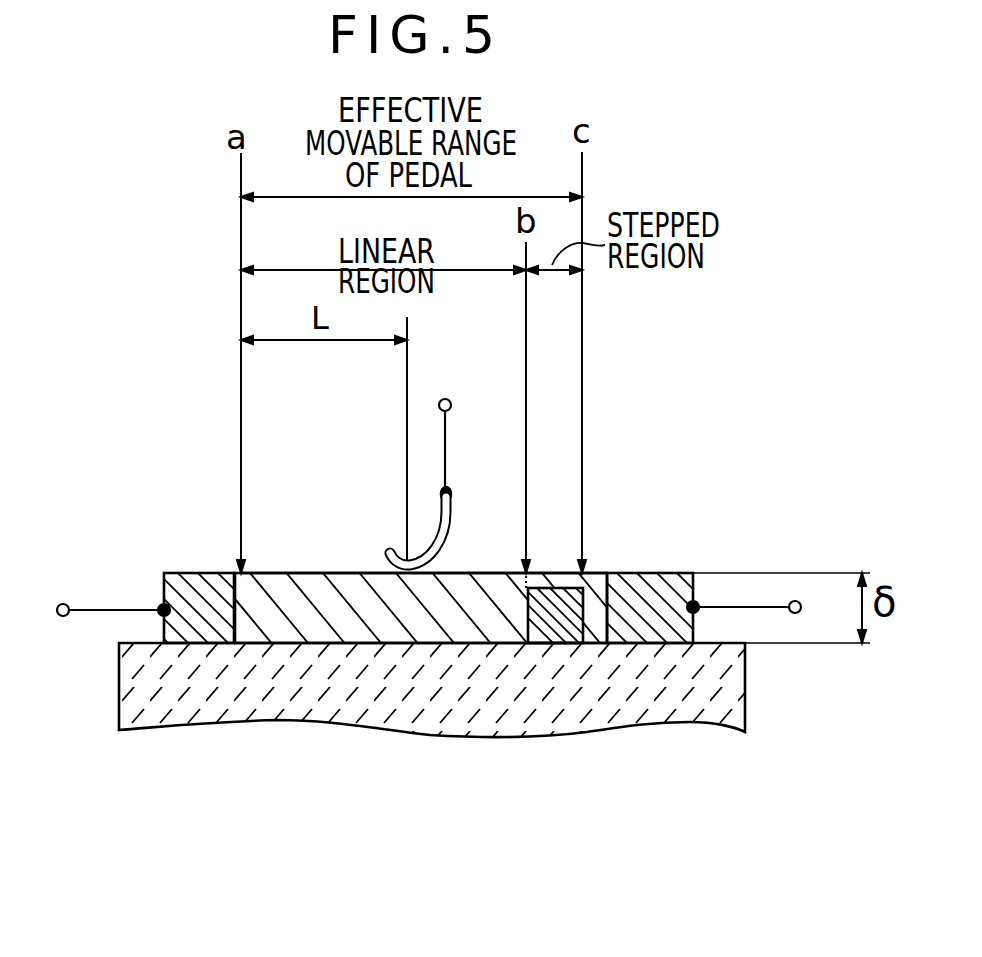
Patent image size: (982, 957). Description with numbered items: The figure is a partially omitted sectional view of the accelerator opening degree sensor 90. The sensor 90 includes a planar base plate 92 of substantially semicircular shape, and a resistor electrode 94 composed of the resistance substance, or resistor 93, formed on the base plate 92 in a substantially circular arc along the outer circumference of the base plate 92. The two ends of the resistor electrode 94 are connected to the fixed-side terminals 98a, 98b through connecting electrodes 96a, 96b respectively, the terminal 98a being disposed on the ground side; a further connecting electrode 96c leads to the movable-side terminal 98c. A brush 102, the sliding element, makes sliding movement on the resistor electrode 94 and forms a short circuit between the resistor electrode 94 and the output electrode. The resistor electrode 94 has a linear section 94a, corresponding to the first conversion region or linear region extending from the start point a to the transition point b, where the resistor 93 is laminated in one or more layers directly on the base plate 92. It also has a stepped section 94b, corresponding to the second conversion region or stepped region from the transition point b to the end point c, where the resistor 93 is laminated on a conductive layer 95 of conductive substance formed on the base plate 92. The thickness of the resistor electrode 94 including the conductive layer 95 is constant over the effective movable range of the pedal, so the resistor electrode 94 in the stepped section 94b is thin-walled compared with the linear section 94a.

The sensor 90 is at (630, 744).
The base plate 92 is at (420, 720).
The resistor 93 is at (303, 615).
The resistor electrode 94 is at (307, 580).
The linear section 94a is at (353, 573).
The stepped section 94b is at (549, 572).
The conductive layer 95 is at (548, 623).
The connecting electrode 96a is at (177, 572).
The connecting electrode 96b is at (663, 573).
The connecting electrode 96c is at (447, 452).
The terminal 98a is at (63, 600).
The terminal 98b is at (797, 600).
The terminal 98c is at (452, 402).
The brush 102 is at (450, 517).